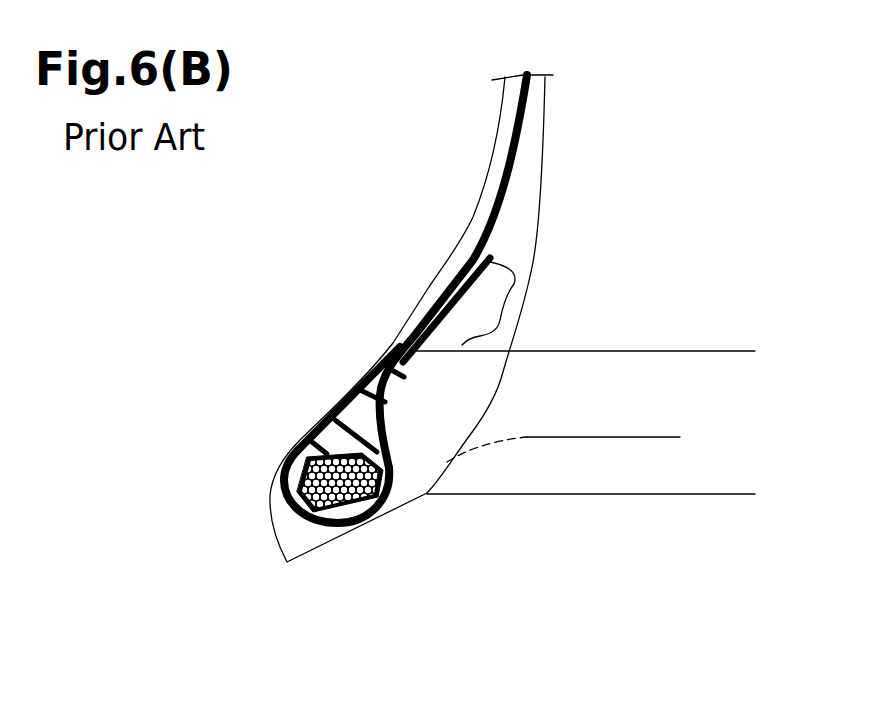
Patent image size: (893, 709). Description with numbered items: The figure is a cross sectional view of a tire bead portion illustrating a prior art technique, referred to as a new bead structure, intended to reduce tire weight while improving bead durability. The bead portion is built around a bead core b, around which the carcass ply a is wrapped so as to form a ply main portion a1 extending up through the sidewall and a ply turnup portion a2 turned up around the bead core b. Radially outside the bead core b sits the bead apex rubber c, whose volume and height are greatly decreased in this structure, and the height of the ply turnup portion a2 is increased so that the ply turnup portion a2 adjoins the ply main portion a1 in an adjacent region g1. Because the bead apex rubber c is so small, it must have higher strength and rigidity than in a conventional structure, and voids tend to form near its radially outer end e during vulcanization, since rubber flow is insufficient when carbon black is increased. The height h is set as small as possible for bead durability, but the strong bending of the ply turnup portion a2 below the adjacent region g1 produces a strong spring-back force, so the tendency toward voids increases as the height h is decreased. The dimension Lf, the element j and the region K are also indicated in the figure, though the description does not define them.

The carcass ply a is at (547, 271).
The ply main portion a1 is at (472, 268).
The ply turnup portion a2 is at (492, 262).
The bead core b is at (300, 487).
The bead apex rubber c is at (358, 415).
The radially outer end of the bead apex rubber e is at (393, 338).
The adjacent region g1 is at (500, 320).
The height h is at (753, 351).
The rim flange height Lf is at (676, 437).
The bead wrapping / flipper j is at (352, 520).
The bead portion region K is at (417, 368).